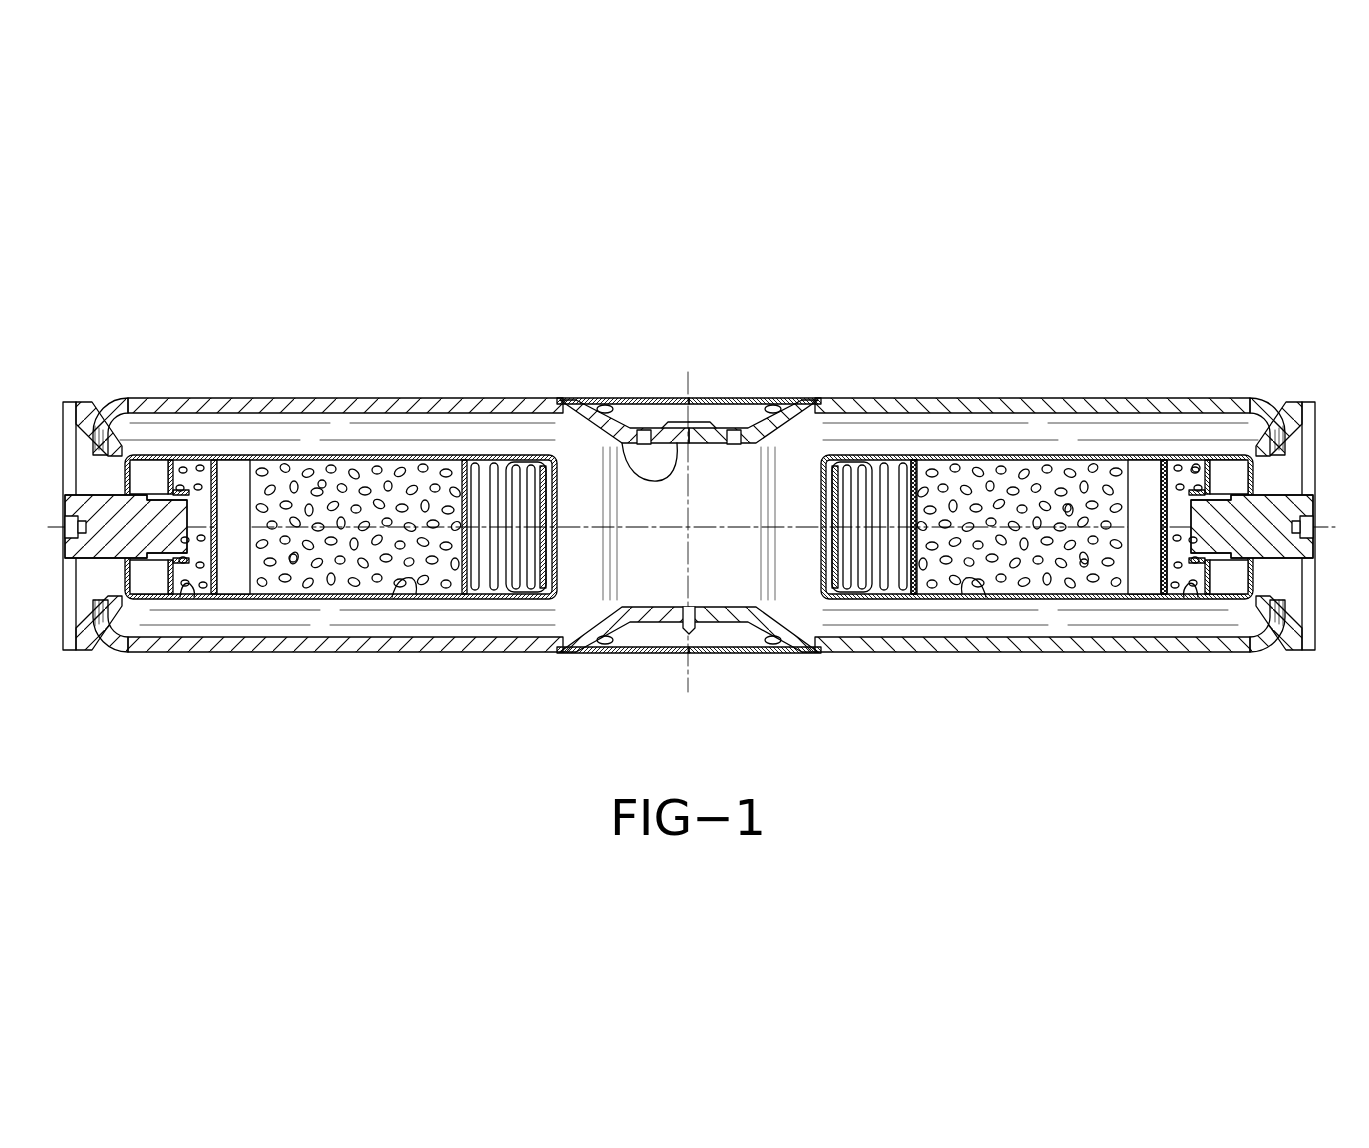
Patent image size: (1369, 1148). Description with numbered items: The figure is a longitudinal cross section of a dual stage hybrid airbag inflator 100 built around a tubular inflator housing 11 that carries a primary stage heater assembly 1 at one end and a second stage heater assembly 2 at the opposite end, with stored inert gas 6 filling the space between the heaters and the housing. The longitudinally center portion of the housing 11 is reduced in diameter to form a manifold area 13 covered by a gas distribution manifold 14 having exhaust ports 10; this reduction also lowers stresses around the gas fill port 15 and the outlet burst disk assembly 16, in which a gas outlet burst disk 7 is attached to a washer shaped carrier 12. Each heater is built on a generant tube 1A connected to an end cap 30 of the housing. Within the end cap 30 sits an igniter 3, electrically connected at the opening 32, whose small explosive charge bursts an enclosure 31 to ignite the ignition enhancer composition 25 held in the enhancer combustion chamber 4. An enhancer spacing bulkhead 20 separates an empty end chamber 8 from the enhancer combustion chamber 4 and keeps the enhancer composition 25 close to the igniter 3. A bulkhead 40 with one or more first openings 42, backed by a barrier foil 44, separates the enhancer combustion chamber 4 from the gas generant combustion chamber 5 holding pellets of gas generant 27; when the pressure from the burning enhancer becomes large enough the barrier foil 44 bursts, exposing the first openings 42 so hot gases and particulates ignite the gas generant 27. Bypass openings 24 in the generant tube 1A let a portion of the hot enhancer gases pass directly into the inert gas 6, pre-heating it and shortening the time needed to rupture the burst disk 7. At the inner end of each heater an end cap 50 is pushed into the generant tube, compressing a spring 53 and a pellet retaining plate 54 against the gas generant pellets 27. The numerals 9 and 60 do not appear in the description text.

The dual stage hybrid airbag inflator 100 is at (560, 275).
The primary stage heater assembly 1 is at (998, 537).
The generant tube 1A is at (916, 600).
The second stage heater assembly 2 is at (335, 483).
The igniter 3 is at (1237, 520).
The enhancer combustion chamber 4 is at (176, 476).
The gas generant combustion chamber 5 is at (311, 580).
The stored inert gas 6 is at (352, 605).
The gas outlet burst disk 7 is at (664, 430).
The empty end chamber 8 is at (1262, 398).
The perforation hole 9 is at (1195, 466).
The exhaust ports 10 is at (605, 645).
The tubular inflator housing 11 is at (404, 398).
The washer shaped carrier 12 is at (727, 428).
The manifold area 13 is at (723, 628).
The gas distribution manifold 14 is at (700, 398).
The gas fill port 15 is at (682, 634).
The outlet burst disk assembly 16 is at (625, 445).
The enhancer spacing bulkhead 20 is at (183, 586).
The bypass openings 24 is at (292, 562).
The ignition enhancer composition 25 is at (200, 470).
The gas generant 27 is at (320, 482).
The end cap 30 is at (63, 398).
The enclosure 31 is at (1165, 527).
The opening 32 is at (1286, 528).
The bulkhead 40 is at (212, 592).
The first openings 42 is at (222, 468).
The barrier foil 44 is at (258, 470).
The end cap 50 is at (550, 600).
The spring 53 is at (518, 498).
The pellet retaining plate 54 is at (478, 490).
The clip 60 is at (395, 590).